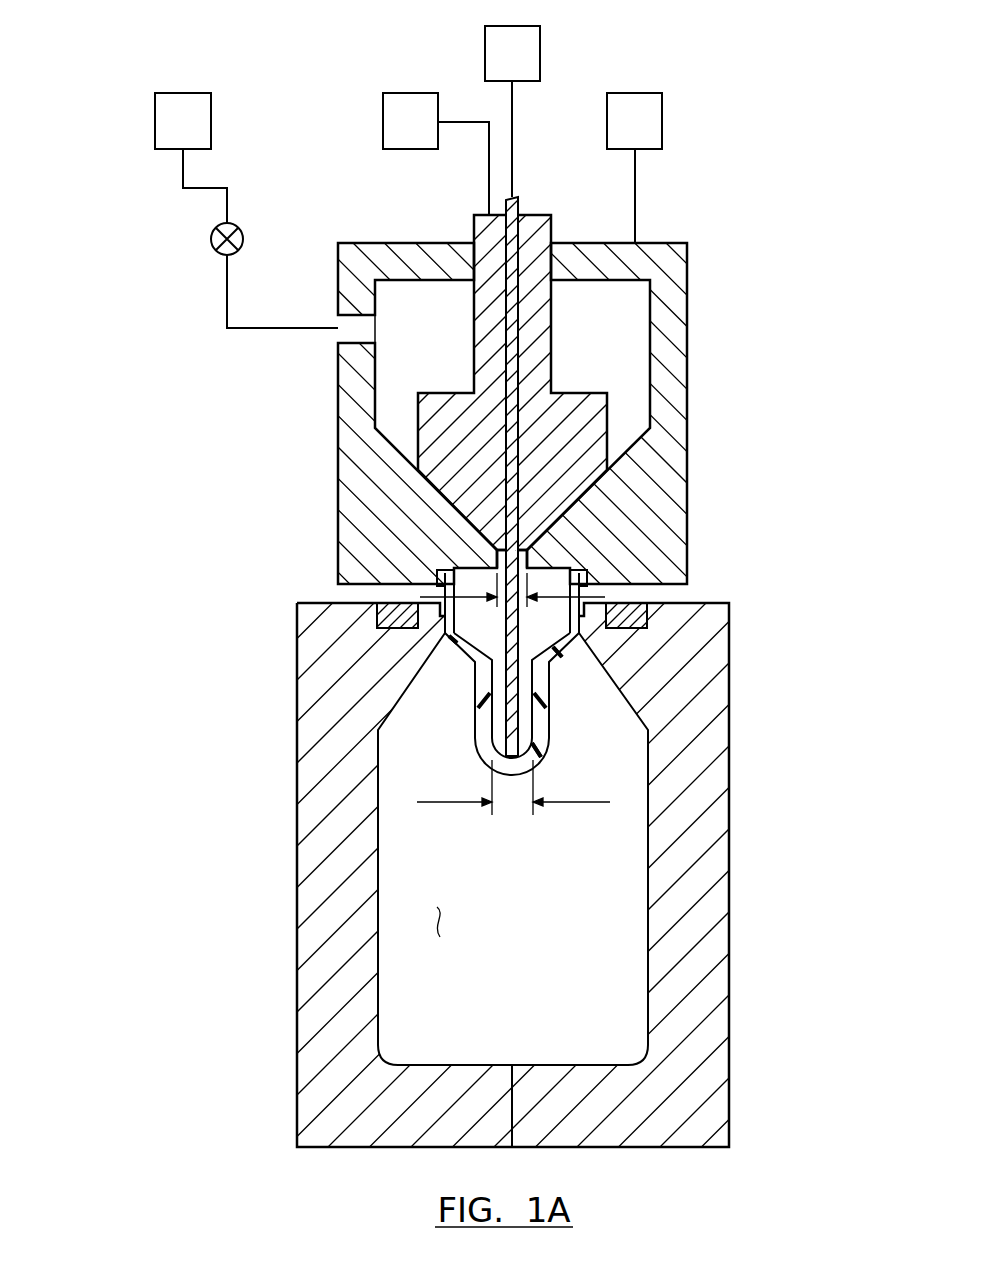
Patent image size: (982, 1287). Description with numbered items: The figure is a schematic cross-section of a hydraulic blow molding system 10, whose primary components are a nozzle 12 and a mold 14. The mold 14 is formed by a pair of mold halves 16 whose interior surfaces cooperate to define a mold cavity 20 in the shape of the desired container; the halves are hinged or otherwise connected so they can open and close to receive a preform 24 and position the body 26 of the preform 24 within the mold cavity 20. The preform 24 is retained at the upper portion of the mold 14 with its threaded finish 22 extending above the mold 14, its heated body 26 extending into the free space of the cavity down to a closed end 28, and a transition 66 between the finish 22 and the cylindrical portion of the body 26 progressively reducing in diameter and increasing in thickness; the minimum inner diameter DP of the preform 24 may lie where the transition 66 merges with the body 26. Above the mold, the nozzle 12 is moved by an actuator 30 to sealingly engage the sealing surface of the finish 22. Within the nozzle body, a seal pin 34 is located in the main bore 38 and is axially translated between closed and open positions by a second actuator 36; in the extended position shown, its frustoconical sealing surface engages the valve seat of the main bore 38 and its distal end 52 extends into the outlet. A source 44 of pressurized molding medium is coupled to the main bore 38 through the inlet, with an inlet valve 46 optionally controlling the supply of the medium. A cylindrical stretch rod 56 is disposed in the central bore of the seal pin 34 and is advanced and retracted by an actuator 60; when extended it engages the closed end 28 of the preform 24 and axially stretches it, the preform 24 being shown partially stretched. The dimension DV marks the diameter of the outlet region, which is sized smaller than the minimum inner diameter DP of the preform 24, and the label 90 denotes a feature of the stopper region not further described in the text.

The hydraulic blow molding system 10 is at (153, 63).
The nozzle 12 is at (689, 368).
The mold 14 is at (729, 917).
The mold halves 16 is at (673, 1068).
The mold cavity 20 is at (432, 926).
The threaded finish 22 is at (445, 580).
The preform 24 is at (560, 720).
The body 26 is at (555, 678).
The closed end 28 is at (525, 768).
The actuator 30 is at (640, 108).
The seal pin 34 is at (612, 435).
The second actuator 36 is at (405, 108).
The main bore 38 is at (390, 372).
The source 44 is at (176, 108).
The inlet valve 46 is at (211, 245).
The distal end 52 is at (490, 524).
The stretch rod 56 is at (519, 208).
The actuator 60 is at (527, 540).
The transition 66 is at (506, 272).
The septum 90 is at (478, 652).
The valve diameter DV is at (470, 598).
The minimum inner diameter DP is at (447, 803).